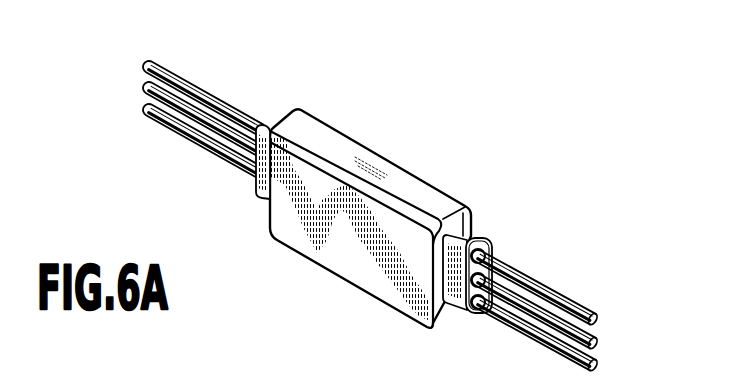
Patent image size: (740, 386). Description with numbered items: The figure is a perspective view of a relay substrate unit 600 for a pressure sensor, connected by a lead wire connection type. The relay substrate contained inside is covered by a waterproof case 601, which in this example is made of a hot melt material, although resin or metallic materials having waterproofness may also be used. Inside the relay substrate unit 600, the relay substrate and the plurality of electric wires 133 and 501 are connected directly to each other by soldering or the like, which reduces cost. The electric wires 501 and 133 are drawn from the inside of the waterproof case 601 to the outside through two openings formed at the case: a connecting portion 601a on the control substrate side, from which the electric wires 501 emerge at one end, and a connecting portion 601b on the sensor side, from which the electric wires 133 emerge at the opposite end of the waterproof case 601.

The relay substrate unit 600 is at (387, 183).
The waterproof case 601 is at (348, 143).
The connecting portion on a control substrate side 601a is at (267, 122).
The connecting portion on a sensor side 601b is at (475, 236).
The electric wires 501 is at (220, 150).
The electric wires 133 is at (576, 352).